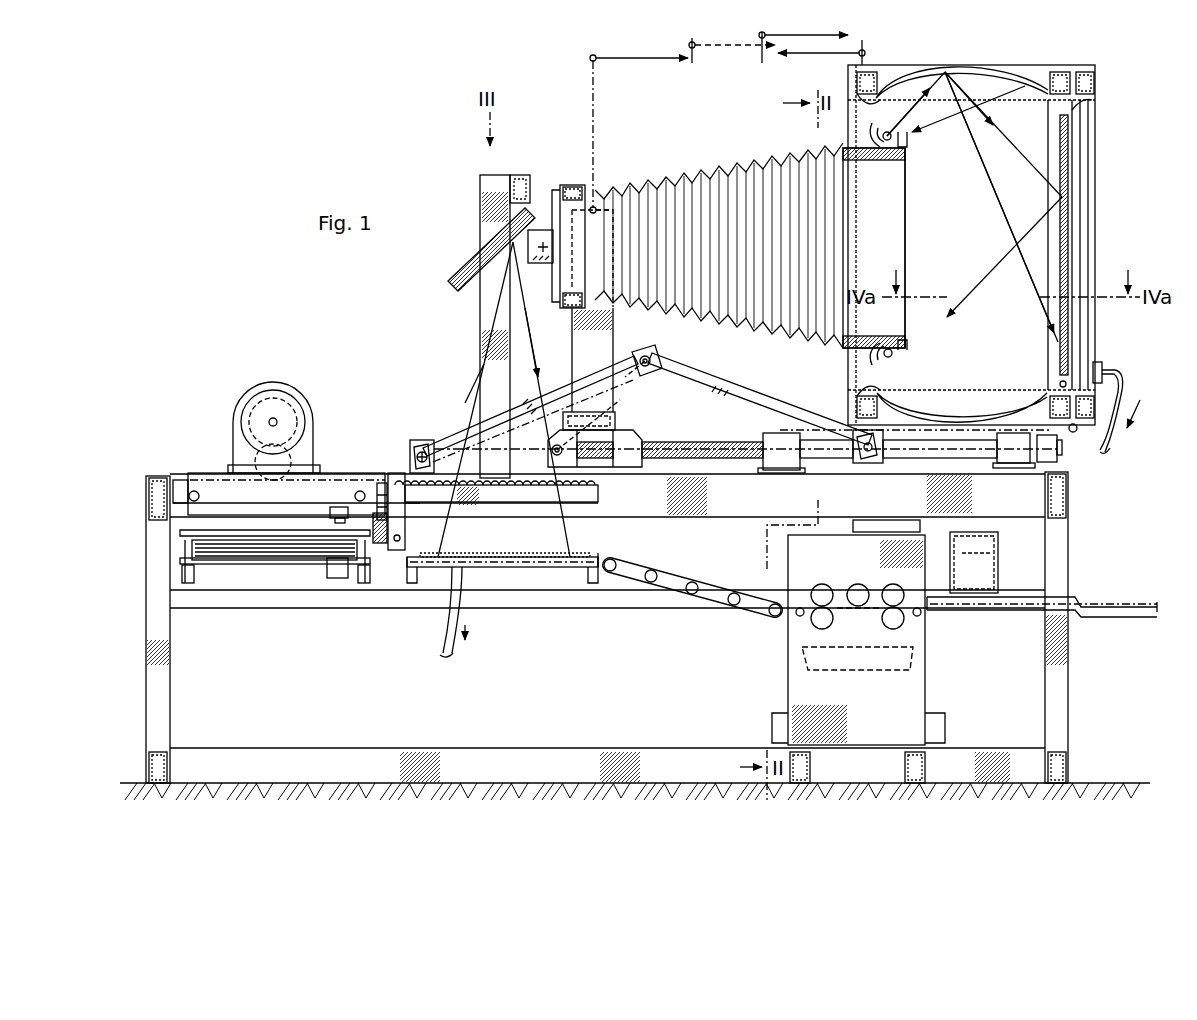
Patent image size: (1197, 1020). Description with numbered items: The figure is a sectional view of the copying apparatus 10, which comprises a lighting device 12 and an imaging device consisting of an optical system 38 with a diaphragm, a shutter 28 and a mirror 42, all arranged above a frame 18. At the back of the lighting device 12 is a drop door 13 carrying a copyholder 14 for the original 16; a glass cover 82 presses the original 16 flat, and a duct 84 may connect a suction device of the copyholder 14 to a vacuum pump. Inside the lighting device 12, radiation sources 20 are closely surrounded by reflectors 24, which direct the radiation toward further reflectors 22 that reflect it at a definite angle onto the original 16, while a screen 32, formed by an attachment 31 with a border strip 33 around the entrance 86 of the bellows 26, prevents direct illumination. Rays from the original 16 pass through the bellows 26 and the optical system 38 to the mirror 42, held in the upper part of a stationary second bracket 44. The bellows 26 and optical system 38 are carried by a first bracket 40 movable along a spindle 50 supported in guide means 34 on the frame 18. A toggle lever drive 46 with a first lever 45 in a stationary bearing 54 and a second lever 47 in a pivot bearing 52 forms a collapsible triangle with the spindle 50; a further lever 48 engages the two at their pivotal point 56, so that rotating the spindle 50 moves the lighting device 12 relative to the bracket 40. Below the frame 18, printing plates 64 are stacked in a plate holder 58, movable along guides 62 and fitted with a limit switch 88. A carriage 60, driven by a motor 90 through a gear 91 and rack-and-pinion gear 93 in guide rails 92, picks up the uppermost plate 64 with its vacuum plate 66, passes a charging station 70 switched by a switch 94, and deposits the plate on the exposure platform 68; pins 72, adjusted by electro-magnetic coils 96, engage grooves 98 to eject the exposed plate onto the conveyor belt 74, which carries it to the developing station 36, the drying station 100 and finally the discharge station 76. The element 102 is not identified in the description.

The apparatus 10 is at (397, 376).
The lighting device 12 is at (1016, 64).
The drop door 13 is at (1101, 278).
The copyholder 14 is at (1081, 213).
The original 16 is at (1069, 180).
The frame 18 is at (144, 481).
The radiation sources 20 is at (891, 134).
The reflectors 22 is at (856, 92).
The reflectors 24 is at (870, 138).
The bellows 26 is at (708, 168).
The shutter 28 is at (560, 200).
The attachment 31 is at (925, 121).
The screen 32 is at (910, 263).
The border strip 33 is at (908, 145).
The guide means 34 is at (772, 472).
The developing station 36 is at (930, 675).
The optical system 38 is at (537, 265).
The first bracket 40 is at (612, 360).
The mirror 42 is at (468, 288).
The second bracket 44 is at (480, 345).
The first lever 45 is at (562, 383).
The toggle lever drive 46 is at (652, 349).
The second lever 47 is at (735, 389).
The lever 48 is at (640, 428).
The spindle 50 is at (705, 440).
The pivot bearing 52 is at (866, 460).
The stationary bearing 54 is at (424, 440).
The pivotal point 56 is at (647, 368).
The plate holder 58 is at (266, 560).
The carriage 60 is at (205, 470).
The guides 62 is at (188, 585).
The printing plates 64 is at (192, 552).
The vacuum plate 66 is at (180, 533).
The exposure platform 68 is at (597, 554).
The charging station 70 is at (402, 552).
The pins 72 is at (381, 544).
The conveyor belt 74 is at (690, 585).
The discharge station 76 is at (1020, 610).
The glass cover 82 is at (1062, 215).
The duct 84 is at (1100, 421).
The entrance 86 is at (874, 248).
The limit switch 88 is at (337, 580).
The motor 90 is at (300, 400).
The gear 91 is at (258, 455).
The guide rails 92 is at (480, 500).
The rack-and-pinion gear 93 is at (578, 500).
The switch 94 is at (338, 505).
The electro-magnetic coils 96 is at (382, 482).
The grooves 98 is at (418, 556).
The drying station 100 is at (1000, 577).
The rear wall 102 is at (1090, 137).